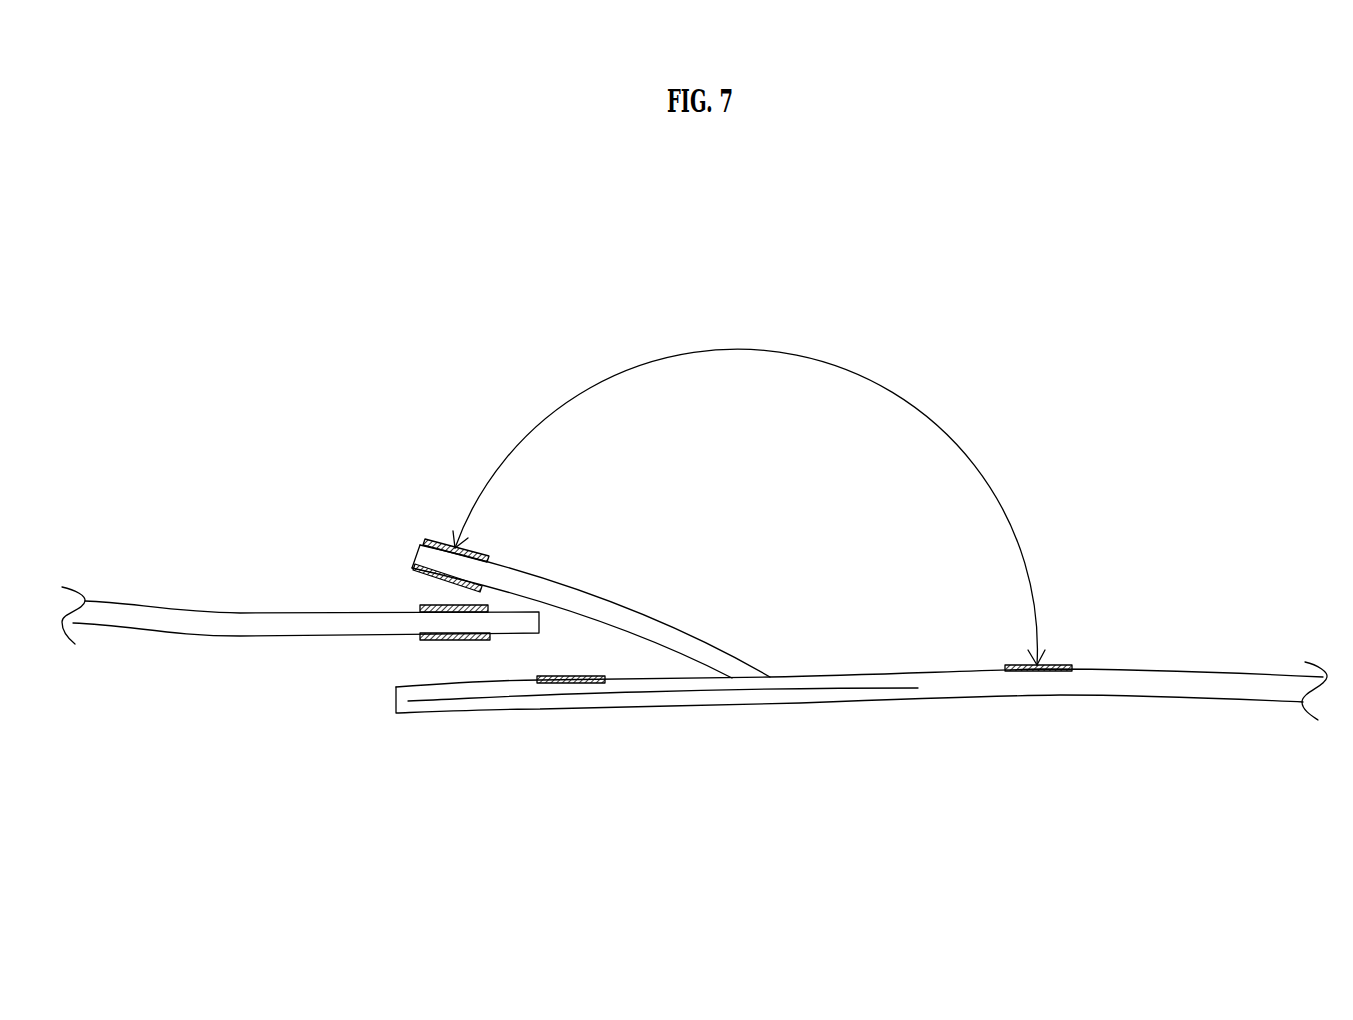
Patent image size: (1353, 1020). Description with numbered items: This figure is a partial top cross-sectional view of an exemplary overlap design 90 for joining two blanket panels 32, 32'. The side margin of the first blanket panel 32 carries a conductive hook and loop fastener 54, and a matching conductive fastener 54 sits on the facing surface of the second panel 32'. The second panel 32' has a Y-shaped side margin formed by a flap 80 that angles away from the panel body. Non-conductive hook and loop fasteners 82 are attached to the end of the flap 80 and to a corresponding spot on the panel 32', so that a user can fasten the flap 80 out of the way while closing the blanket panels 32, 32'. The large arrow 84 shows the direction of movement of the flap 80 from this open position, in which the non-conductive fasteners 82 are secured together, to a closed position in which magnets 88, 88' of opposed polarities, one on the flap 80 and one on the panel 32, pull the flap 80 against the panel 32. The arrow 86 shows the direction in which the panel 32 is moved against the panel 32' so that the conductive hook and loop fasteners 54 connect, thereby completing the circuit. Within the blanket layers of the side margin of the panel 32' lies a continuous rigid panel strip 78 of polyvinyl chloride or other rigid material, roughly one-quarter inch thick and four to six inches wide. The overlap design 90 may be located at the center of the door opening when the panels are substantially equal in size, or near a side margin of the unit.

The overlap design 90 is at (264, 393).
The blanket panel 32 is at (300, 602).
The blanket panel 32' is at (861, 704).
The conductive hook and loop fastener 54 is at (413, 636).
The panel strip 78 is at (847, 690).
The flap 80 is at (640, 611).
The non-conductive hook and loop fastener 82 is at (486, 560).
The arrow 84 is at (940, 432).
The arrow 86 is at (572, 675).
The magnet 88 is at (433, 551).
The magnet 88' is at (410, 574).